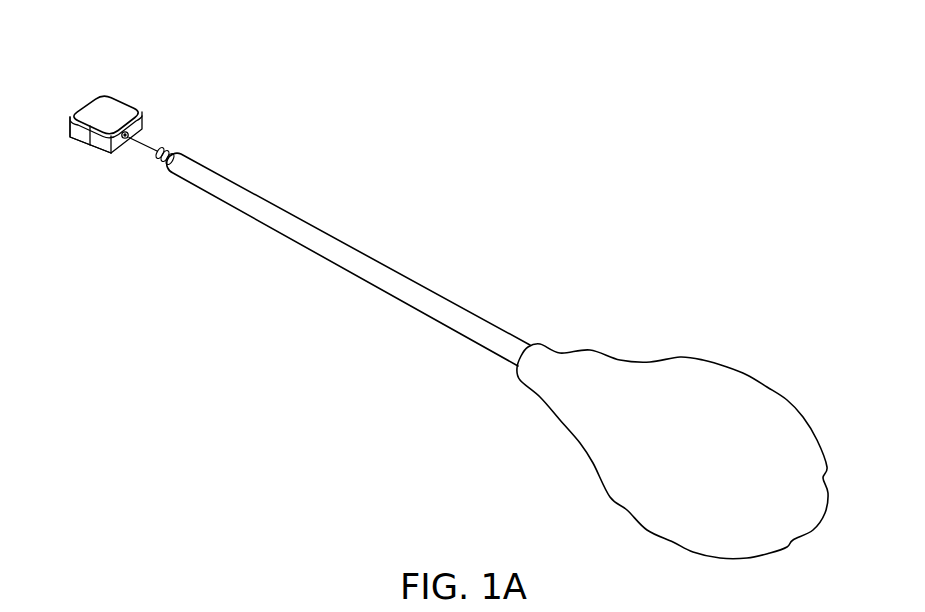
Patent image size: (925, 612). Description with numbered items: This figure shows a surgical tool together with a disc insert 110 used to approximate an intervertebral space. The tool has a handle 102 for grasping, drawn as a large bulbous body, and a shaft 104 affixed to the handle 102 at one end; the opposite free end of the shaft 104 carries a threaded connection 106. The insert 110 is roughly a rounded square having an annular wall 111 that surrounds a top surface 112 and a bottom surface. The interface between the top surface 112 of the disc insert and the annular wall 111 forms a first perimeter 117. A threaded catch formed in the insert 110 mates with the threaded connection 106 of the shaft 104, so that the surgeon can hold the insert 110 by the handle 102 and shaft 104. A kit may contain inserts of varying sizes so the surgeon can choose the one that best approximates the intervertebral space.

The handle 102 is at (740, 367).
The shaft 104 is at (388, 275).
The threaded connection 106 is at (164, 148).
The insert 110 is at (128, 84).
The annular wall 111 is at (73, 143).
The top surface 112 is at (112, 110).
The first perimeter 117 is at (75, 120).